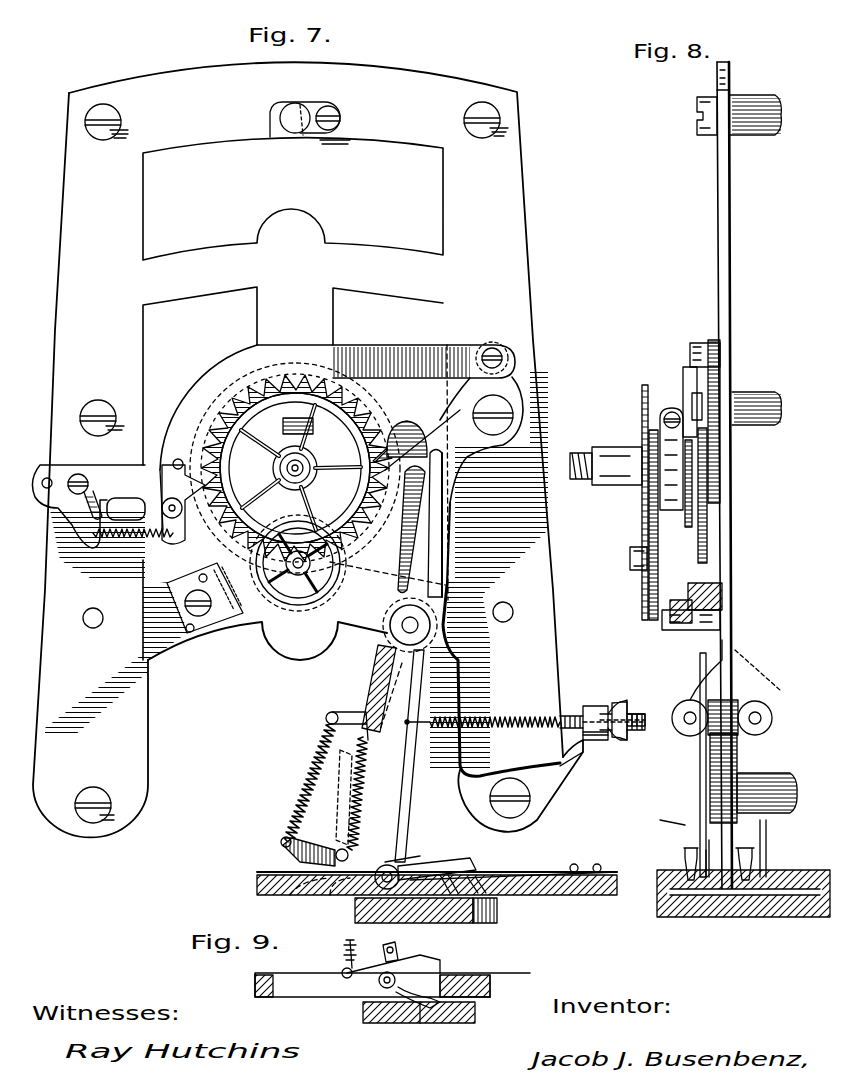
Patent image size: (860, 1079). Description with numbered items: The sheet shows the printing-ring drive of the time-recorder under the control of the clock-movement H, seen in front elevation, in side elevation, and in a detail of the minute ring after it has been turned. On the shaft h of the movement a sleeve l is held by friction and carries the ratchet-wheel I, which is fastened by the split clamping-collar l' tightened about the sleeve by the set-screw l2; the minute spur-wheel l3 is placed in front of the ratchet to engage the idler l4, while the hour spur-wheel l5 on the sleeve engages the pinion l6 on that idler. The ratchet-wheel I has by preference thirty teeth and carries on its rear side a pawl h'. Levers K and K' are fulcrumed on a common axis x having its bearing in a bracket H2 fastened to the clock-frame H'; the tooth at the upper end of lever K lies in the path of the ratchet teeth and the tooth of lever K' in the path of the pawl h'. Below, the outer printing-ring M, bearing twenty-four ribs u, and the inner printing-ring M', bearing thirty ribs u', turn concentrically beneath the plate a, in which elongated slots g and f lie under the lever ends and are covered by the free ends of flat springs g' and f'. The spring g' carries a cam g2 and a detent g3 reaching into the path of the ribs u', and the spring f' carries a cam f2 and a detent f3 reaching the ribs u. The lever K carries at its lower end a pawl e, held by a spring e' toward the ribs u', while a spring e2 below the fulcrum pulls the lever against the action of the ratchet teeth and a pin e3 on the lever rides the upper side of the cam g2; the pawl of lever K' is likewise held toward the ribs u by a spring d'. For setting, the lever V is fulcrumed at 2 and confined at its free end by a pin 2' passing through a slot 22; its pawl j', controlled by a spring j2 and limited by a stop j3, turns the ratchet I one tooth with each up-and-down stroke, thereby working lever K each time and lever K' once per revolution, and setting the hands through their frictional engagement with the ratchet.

In FIG. 7, the clock-movement H is at (298, 449).
In FIG. 8, the clock-movement H is at (739, 477).
In FIG. 7, the ratchet-wheel I is at (265, 430).
In FIG. 7, the setting lever V is at (400, 350).
In FIG. 8, the setting lever V is at (706, 345).
In FIG. 7, the fulcrum 2 is at (492, 338).
In FIG. 8, the fulcrum 2 is at (735, 381).
In FIG. 7, the pin 2' is at (72, 461).
In FIG. 7, the slot 22 is at (91, 492).
In FIG. 7, the pawl j' is at (113, 503).
In FIG. 7, the spring j2 is at (176, 545).
In FIG. 7, the stop j3 is at (178, 458).
In FIG. 7, the sleeve l is at (432, 489).
In FIG. 8, the sleeve l is at (606, 453).
In FIG. 7, the split clamping-collar l' is at (389, 472).
In FIG. 8, the split clamping-collar l' is at (667, 445).
In FIG. 8, the set-screw l2 is at (688, 372).
In FIG. 8, the minute spur-wheel l3 is at (648, 440).
In FIG. 8, the idler l4 is at (660, 612).
In FIG. 7, the hour spur-wheel l5 is at (335, 370).
In FIG. 8, the hour spur-wheel l5 is at (642, 395).
In FIG. 8, the pinion l6 is at (636, 570).
In FIG. 7, the shaft h is at (400, 423).
In FIG. 7, the pawl h' is at (319, 563).
In FIG. 7, the clock-frame H' is at (455, 680).
In FIG. 7, the bracket H2 is at (520, 786).
In FIG. 7, the lever K is at (437, 726).
In FIG. 8, the lever K is at (724, 758).
In FIG. 7, the lever K' is at (359, 692).
In FIG. 7, the fulcrum x is at (402, 628).
In FIG. 7, the spring d' is at (303, 783).
In FIG. 7, the pawl e is at (360, 805).
In FIG. 9, the pawl e is at (411, 1028).
In FIG. 7, the spring e' is at (379, 817).
In FIG. 7, the spring e2 is at (530, 715).
In FIG. 8, the pin e3 is at (642, 766).
In FIG. 8, the slot f is at (778, 848).
In FIG. 7, the flat spring f' is at (449, 863).
In FIG. 8, the flat spring f' is at (760, 850).
In FIG. 7, the cam f2 is at (288, 850).
In FIG. 7, the detent f3 is at (485, 870).
In FIG. 7, the slot g is at (496, 864).
In FIG. 8, the slot g is at (717, 858).
In FIG. 9, the slot g is at (395, 964).
In FIG. 7, the flat spring g' is at (580, 860).
In FIG. 8, the flat spring g' is at (673, 860).
In FIG. 9, the flat spring g' is at (511, 965).
In FIG. 7, the cam g2 is at (415, 860).
In FIG. 8, the cam g2 is at (662, 821).
In FIG. 9, the cam g2 is at (400, 955).
In FIG. 7, the detent g3 is at (572, 864).
In FIG. 9, the detent g3 is at (463, 970).
In FIG. 7, the plate a is at (310, 897).
In FIG. 7, the ribs u is at (334, 897).
In FIG. 9, the ribs u' is at (431, 1033).
In FIG. 7, the printing-ring M is at (437, 897).
In FIG. 8, the printing-ring M is at (743, 893).
In FIG. 9, the printing-ring M is at (392, 985).
In FIG. 7, the printing-ring M' is at (438, 920).
In FIG. 9, the printing-ring M' is at (426, 1034).